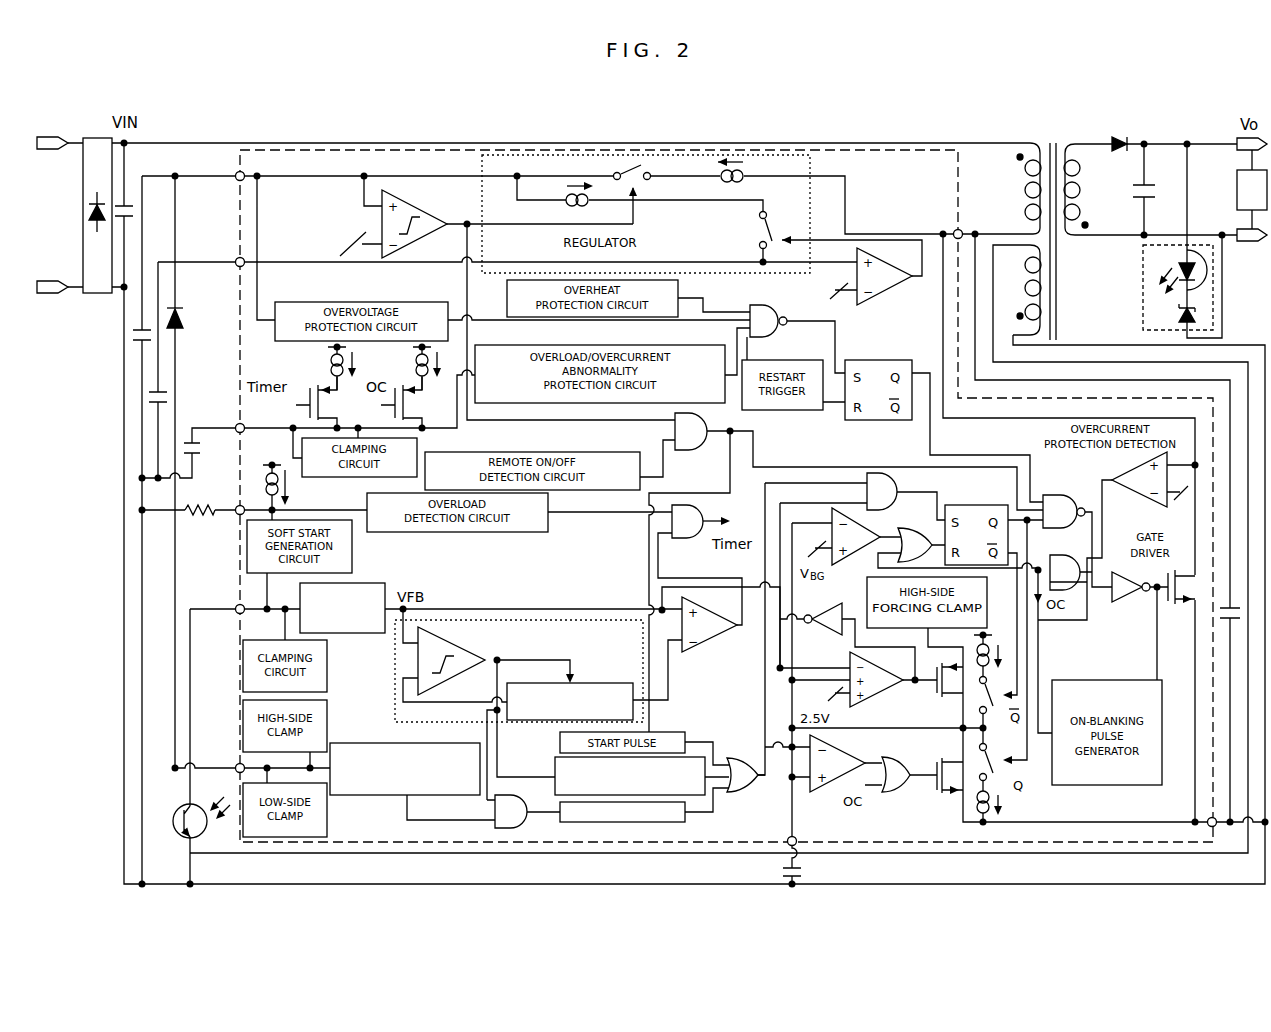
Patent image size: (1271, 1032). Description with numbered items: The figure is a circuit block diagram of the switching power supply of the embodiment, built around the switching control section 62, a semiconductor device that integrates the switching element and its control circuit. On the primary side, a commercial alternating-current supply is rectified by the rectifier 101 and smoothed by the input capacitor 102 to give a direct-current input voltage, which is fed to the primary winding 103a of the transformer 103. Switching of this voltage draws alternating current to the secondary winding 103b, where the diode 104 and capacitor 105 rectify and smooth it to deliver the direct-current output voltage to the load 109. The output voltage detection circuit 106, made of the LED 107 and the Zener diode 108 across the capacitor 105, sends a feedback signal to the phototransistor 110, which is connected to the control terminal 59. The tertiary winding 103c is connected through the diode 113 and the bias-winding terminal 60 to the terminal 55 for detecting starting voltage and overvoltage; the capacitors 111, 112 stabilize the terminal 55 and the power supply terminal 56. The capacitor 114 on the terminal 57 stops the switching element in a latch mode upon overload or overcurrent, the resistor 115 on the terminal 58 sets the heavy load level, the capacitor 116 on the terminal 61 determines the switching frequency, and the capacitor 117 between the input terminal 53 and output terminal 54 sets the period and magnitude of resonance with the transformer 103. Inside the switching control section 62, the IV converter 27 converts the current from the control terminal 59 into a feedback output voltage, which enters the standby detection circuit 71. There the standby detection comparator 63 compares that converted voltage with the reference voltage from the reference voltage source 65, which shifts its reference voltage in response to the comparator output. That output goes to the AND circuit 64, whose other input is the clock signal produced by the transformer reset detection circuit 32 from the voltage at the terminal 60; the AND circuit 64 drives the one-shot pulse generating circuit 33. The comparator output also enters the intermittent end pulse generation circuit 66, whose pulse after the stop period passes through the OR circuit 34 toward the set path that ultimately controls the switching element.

The rectifier 101 is at (97, 135).
The input capacitor 102 is at (133, 222).
The transformer 103 is at (1059, 227).
The primary winding 103a is at (1026, 196).
The secondary winding 103b is at (1080, 200).
The tertiary winding (bias winding) 103c is at (1043, 273).
The diode 104 is at (1122, 138).
The capacitor 105 is at (1146, 200).
The output voltage detection circuit 106 is at (1166, 241).
The LED 107 is at (1205, 270).
The Zener diode 108 is at (1200, 312).
The load 109 is at (1237, 192).
The phototransistor 110 is at (178, 840).
The capacitor 111 is at (137, 343).
The capacitor 112 is at (165, 400).
The diode 113 is at (181, 320).
The capacitor 114 is at (205, 472).
The resistor 115 is at (195, 515).
The capacitor 116 is at (800, 871).
The capacitor 117 is at (1192, 640).
The IV converter 27 is at (365, 583).
The transformer reset detection circuit 32 is at (378, 797).
The one-shot pulse generating circuit 33 is at (657, 824).
The OR circuit 34 is at (742, 758).
The input terminal 53 is at (955, 230).
The output terminal 54 is at (1216, 827).
The terminal for detecting overvoltage protection and starting voltage 55 is at (236, 175).
The power supply terminal 56 is at (238, 258).
The terminal for detecting remote on/off and overload/overcurrent protection 57 is at (238, 432).
The terminal for detecting a heavy load 58 is at (238, 514).
The control terminal 59 is at (238, 613).
The terminal for detecting a bias winding voltage 60 is at (238, 764).
The terminal for connecting a capacitor 61 is at (797, 838).
The switching control section 62 is at (838, 150).
The standby detection comparator 63 is at (462, 645).
The AND circuit 64 is at (510, 830).
The reference voltage source 65 is at (600, 683).
The intermittent (stop) end pulse generation circuit 66 is at (555, 765).
The standby detection circuit 71 is at (498, 650).